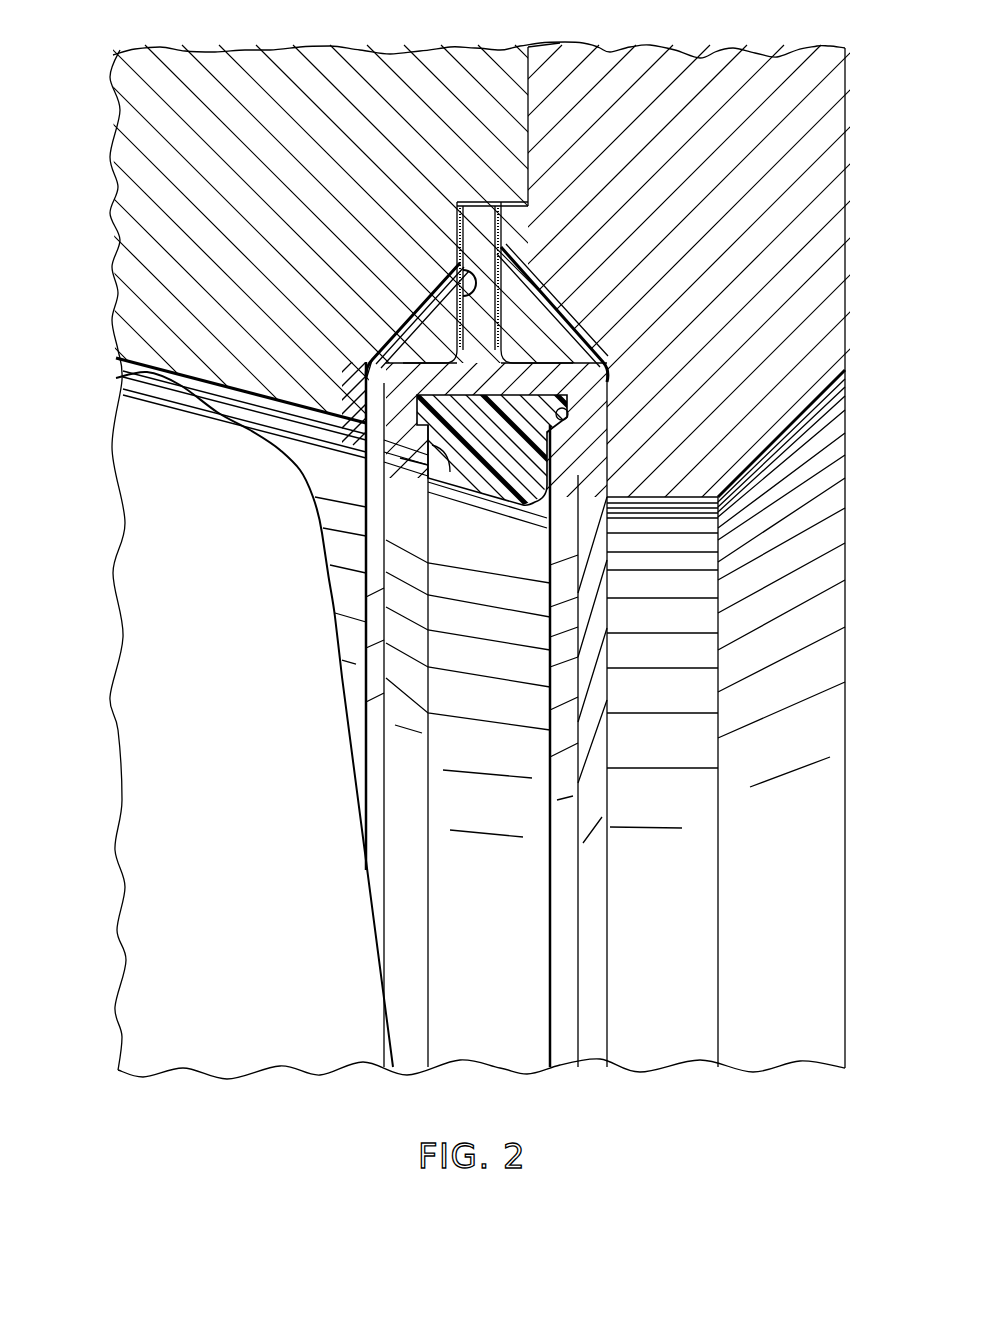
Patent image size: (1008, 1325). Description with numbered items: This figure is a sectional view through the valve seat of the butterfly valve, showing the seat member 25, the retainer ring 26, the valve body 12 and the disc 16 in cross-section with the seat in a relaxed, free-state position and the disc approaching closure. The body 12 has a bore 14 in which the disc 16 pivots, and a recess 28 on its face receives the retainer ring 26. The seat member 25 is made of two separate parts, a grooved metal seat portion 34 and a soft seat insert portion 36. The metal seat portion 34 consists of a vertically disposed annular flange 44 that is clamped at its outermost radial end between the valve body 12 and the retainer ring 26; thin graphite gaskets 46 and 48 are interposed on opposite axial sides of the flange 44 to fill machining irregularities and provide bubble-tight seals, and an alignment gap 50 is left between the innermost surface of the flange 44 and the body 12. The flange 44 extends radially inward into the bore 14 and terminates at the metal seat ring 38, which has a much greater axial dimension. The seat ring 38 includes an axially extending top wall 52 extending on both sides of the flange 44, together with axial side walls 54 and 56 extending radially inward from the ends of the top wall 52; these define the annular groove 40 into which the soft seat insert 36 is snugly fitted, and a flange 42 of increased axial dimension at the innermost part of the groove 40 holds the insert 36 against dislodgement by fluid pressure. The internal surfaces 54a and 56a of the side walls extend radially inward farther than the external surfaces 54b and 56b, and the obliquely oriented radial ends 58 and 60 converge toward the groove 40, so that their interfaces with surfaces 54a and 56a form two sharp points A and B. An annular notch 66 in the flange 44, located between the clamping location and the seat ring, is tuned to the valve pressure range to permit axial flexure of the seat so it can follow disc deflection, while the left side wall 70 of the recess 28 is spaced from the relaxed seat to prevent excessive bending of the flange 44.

The valve body 12 is at (291, 227).
The bore 14 is at (153, 372).
The disc 16 is at (214, 715).
The seat member 25 is at (542, 725).
The retainer ring 26 is at (757, 260).
The recess 28 is at (528, 78).
The metal seat portion 34 is at (615, 516).
The soft seat insert portion 36 is at (603, 600).
The metal seat ring 38 is at (506, 356).
The annular groove 40 is at (534, 456).
The flange 42 is at (574, 412).
The annular flange 44 is at (488, 255).
The graphite gasket 46 is at (457, 230).
The graphite gasket 48 is at (501, 243).
The alignment gap 50 is at (477, 200).
The top wall 52 is at (432, 356).
The axial side wall 54 is at (366, 405).
The internal surface 54a is at (430, 540).
The external surface 54b is at (366, 438).
The axial side wall 56 is at (582, 447).
The internal surface 56a is at (606, 568).
The external surface 56b is at (600, 472).
The radial end 58 is at (428, 468).
The radial end 60 is at (612, 537).
The annular notch 66 is at (455, 292).
The left side wall 70 is at (380, 366).
The sharp point A is at (430, 481).
The sharp point B is at (611, 556).